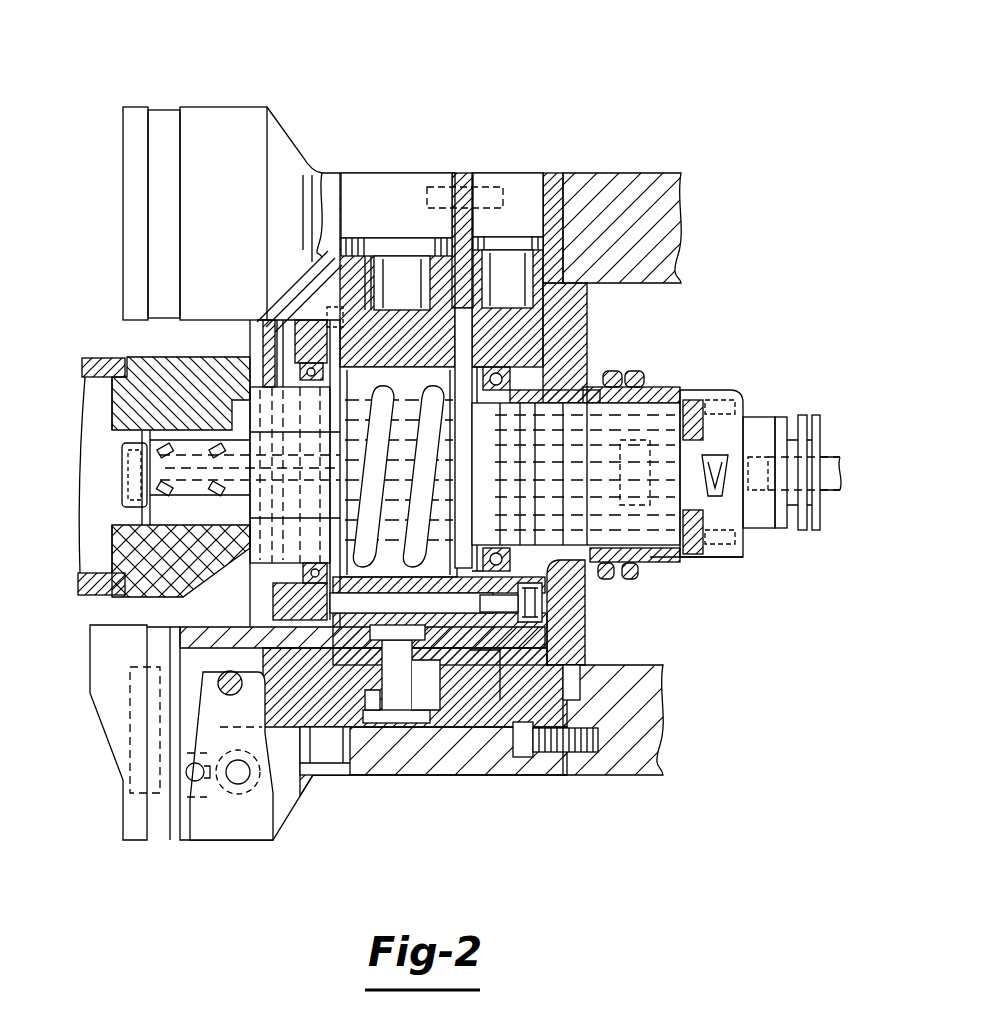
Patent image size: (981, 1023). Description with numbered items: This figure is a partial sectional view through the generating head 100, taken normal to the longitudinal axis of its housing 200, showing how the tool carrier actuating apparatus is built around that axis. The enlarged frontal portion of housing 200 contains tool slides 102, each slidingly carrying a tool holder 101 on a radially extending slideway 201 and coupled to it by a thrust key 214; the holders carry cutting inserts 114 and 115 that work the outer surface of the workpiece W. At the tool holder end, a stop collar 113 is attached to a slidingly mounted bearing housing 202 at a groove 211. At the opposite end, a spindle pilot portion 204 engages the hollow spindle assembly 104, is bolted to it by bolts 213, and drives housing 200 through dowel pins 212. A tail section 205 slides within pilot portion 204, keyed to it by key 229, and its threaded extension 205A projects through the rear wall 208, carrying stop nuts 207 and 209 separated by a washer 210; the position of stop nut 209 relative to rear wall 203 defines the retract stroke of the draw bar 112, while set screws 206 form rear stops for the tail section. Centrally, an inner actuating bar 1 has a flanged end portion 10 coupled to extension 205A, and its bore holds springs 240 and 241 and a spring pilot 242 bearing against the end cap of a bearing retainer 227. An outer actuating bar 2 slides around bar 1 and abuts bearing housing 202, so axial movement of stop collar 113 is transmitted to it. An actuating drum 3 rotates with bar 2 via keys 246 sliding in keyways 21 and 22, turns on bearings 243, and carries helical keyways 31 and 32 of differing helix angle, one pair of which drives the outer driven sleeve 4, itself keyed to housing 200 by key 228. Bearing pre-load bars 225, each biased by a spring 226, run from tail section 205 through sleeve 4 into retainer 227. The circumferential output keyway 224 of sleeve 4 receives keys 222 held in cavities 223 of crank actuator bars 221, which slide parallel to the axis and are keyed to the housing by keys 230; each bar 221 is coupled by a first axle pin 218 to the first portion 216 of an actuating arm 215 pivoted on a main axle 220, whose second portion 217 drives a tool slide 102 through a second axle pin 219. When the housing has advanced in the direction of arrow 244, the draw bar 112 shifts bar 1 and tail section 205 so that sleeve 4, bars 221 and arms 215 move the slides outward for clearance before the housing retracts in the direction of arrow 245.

The inner actuating bar 1 is at (774, 534).
The outer actuating bar 2 is at (700, 393).
The actuating drum 3 is at (368, 305).
The outer driven sleeve 4 is at (305, 318).
The flanged end portion 10 is at (773, 572).
The keyway 21 is at (723, 573).
The keyway 22 is at (707, 366).
The helical slots or keyways 31 is at (406, 442).
The helical slots or keyways 32 is at (423, 475).
The head 100 is at (438, 114).
The tool holder 101 is at (128, 866).
The tool slide 102 is at (145, 872).
The spindle assembly 104 is at (632, 173).
The draw bar 112 is at (828, 460).
The stop collar 113 is at (116, 352).
The insert 114 is at (92, 628).
The insert 115 is at (168, 617).
The housing 200 is at (255, 106).
The slideway 201 is at (160, 108).
The bearing housing 202 is at (102, 609).
The rear wall 203 is at (664, 655).
The spindle pilot portion 204 is at (665, 277).
The tail section 205 is at (667, 301).
The threaded extension 205A is at (738, 587).
The stop member 206 is at (608, 345).
The stop nut 207 is at (694, 615).
The distance 208 is at (628, 583).
The stop nut 209 is at (640, 585).
The washer 210 is at (694, 341).
The groove 211 is at (195, 272).
The dowel pin 212 is at (485, 187).
The bolt 213 is at (522, 745).
The thrust key 214 is at (105, 797).
The actuating arm 215 is at (247, 795).
The first portion 216 is at (236, 673).
The second portion 217 is at (194, 782).
The first axle pin 218 is at (232, 619).
The second axle pin 219 is at (130, 820).
The main axle 220 is at (244, 778).
The crank actuator bar 221 is at (440, 705).
The key 222 is at (400, 695).
The key-receiving cavity 223 is at (362, 700).
The output keyway 224 is at (494, 640).
The bearing pre-load bar 225 is at (562, 612).
The spring 226 is at (355, 600).
The bearing retainer 227 is at (300, 382).
The key 228 is at (414, 293).
The key 229 is at (524, 288).
The key 230 is at (317, 778).
The spring 240 is at (150, 500).
The spring 241 is at (744, 445).
The spring pilot 242 is at (598, 462).
The bearing 243 is at (242, 330).
The arrow 244 is at (743, 181).
The arrow 245 is at (756, 249).
The key 246 is at (448, 592).
The workpiece W is at (85, 356).